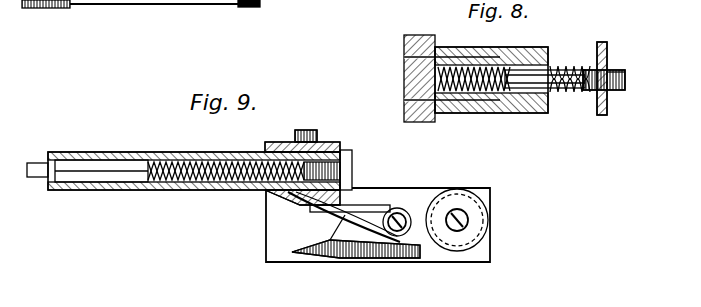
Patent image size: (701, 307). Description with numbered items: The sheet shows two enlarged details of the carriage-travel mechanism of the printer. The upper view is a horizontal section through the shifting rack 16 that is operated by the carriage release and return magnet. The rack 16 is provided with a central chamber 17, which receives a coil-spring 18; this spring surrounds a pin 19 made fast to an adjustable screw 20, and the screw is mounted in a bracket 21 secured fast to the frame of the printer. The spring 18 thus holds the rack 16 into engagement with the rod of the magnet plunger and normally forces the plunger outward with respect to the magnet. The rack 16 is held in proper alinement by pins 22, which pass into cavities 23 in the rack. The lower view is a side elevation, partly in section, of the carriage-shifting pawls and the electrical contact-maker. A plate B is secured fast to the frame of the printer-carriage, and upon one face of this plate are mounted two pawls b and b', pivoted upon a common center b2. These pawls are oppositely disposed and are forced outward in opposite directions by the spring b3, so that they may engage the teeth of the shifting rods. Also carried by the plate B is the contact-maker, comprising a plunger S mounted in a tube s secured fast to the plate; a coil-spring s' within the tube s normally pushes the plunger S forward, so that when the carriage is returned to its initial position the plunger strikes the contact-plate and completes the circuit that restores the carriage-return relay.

In FIG. 8, the pins 22 is at (452, 74).
In FIG. 8, the cavities 23 is at (474, 58).
In FIG. 8, the rack 16 is at (491, 93).
In FIG. 8, the central chamber 17 is at (545, 56).
In FIG. 8, the coil-spring 18 is at (570, 91).
In FIG. 8, the pin 19 is at (612, 63).
In FIG. 8, the adjustable screw 20 is at (615, 92).
In FIG. 8, the bracket 21 is at (626, 56).
In FIG. 9, the plunger S is at (86, 172).
In FIG. 9, the coil-spring s' is at (244, 151).
In FIG. 9, the tube s is at (243, 173).
In FIG. 9, the plate B is at (378, 195).
In FIG. 9, the pawl b is at (337, 217).
In FIG. 9, the pawl b' is at (351, 268).
In FIG. 9, the common center b2 is at (395, 260).
In FIG. 9, the spring b3 is at (340, 262).